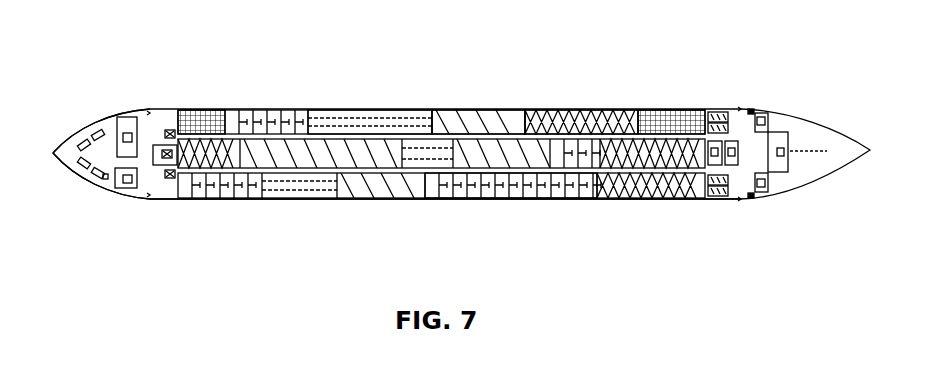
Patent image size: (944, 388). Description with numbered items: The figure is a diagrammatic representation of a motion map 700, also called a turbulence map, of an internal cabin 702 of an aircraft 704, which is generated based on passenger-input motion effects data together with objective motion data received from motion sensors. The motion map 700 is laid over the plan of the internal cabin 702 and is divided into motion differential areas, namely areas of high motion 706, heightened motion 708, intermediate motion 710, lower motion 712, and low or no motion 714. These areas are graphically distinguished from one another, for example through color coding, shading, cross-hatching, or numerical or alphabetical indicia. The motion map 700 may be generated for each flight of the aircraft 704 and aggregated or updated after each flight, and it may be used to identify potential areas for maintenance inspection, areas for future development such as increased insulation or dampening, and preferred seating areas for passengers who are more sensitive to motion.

The motion map 700 is at (710, 98).
The internal cabin 702 is at (167, 201).
The aircraft 704 is at (125, 101).
The area of high motion 706 is at (205, 109).
The area of heightened motion 708 is at (582, 109).
The area of intermediate motion 710 is at (510, 200).
The area of lower motion 712 is at (478, 109).
The area of low or no motion 714 is at (370, 109).